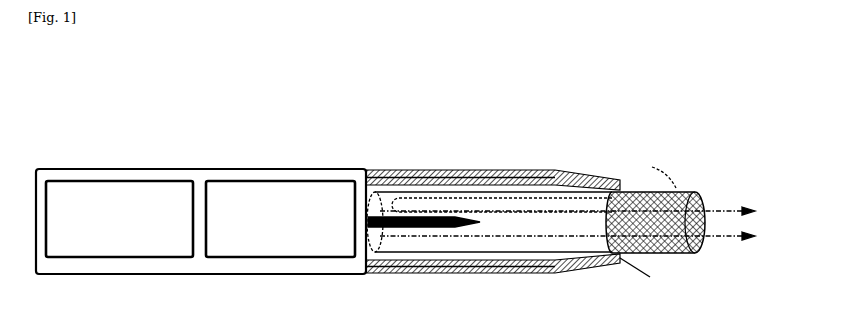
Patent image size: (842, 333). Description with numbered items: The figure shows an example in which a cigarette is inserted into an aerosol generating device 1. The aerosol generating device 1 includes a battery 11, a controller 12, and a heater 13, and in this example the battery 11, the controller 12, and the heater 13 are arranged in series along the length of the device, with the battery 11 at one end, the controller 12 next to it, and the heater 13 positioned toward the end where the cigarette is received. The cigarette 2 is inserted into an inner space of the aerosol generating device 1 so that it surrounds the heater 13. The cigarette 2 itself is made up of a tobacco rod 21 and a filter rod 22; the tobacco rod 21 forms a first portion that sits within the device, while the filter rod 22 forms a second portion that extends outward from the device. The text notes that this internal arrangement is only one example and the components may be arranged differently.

The aerosol generating device 1 is at (575, 87).
The cigarette 2 is at (676, 256).
The battery 11 is at (128, 181).
The controller 12 is at (296, 181).
The heater 13 is at (422, 210).
The tobacco rod 21 is at (507, 192).
The filter rod 22 is at (688, 192).